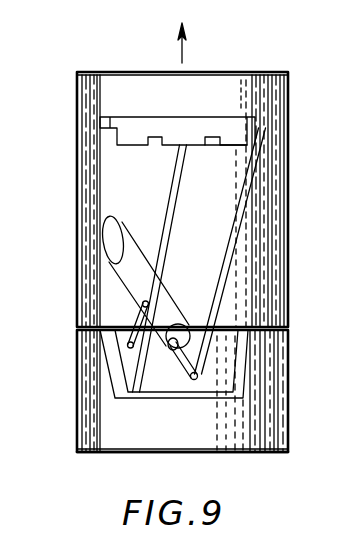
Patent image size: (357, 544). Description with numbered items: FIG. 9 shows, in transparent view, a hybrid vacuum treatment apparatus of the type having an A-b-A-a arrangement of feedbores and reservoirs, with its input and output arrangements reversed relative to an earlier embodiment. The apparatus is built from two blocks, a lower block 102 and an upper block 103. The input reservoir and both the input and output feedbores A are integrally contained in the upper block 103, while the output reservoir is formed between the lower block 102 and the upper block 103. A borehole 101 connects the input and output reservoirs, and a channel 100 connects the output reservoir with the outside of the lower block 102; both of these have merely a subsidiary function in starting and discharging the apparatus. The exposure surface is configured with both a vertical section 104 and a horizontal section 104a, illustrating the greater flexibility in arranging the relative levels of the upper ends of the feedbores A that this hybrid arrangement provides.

The channel 100 is at (275, 350).
The borehole 101 is at (125, 336).
The lower block 102 is at (272, 436).
The upper block 103 is at (273, 221).
The vertical section of exposure surface 104 is at (120, 130).
The horizontal section of exposure surface 104a is at (224, 145).
The input and output feedbores A is at (177, 173).